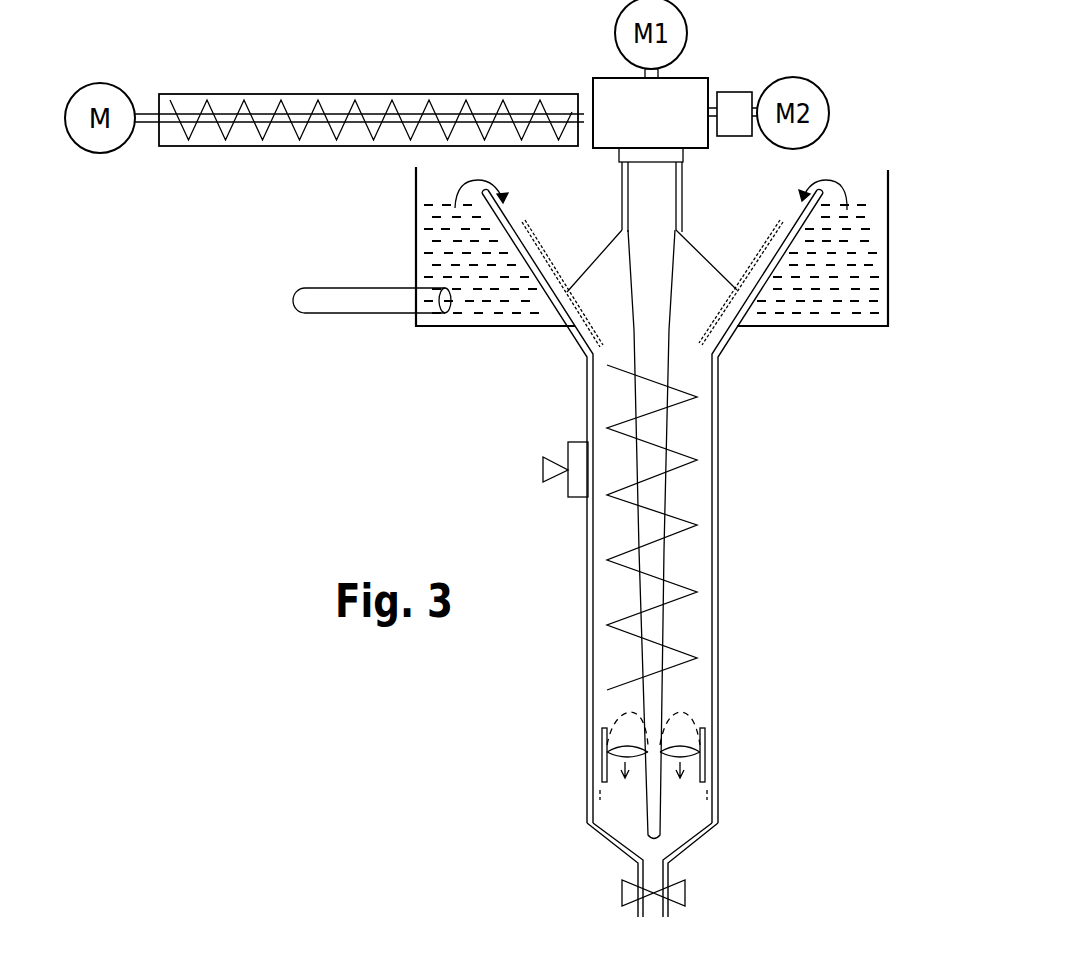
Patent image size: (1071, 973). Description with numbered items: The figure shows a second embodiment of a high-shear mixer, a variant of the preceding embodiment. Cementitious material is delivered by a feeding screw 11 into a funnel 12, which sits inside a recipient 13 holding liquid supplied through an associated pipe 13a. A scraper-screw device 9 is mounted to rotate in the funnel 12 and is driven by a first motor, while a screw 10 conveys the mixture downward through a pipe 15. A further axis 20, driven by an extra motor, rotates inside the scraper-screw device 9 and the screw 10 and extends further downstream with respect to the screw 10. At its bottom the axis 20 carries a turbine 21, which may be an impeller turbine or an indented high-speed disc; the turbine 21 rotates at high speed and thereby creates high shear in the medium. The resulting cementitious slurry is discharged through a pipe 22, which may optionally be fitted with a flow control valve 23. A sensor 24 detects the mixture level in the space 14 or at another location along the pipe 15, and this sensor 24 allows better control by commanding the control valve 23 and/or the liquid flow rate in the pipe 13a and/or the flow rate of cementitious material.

The scraper-screw device 9 is at (706, 241).
The screw 10 is at (617, 395).
The feeding screw 11 is at (350, 94).
The funnel 12 is at (785, 283).
The recipient 13 is at (447, 330).
The pipe 13a is at (338, 298).
The space 14 is at (620, 518).
The pipe 15 is at (620, 610).
The axis 20 is at (617, 700).
The turbine 21 is at (598, 763).
The pipe 22 is at (637, 872).
The flow control valve 23 is at (622, 895).
The sensor 24 is at (560, 470).